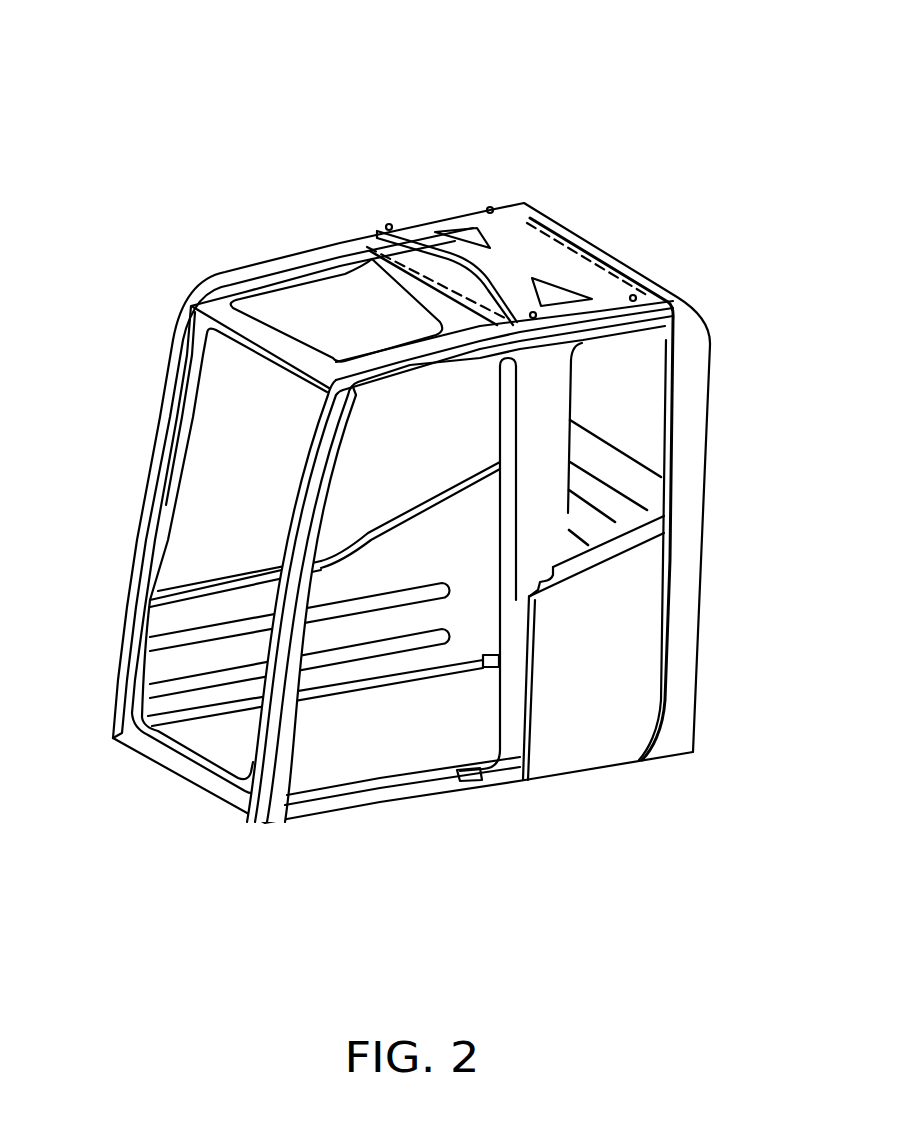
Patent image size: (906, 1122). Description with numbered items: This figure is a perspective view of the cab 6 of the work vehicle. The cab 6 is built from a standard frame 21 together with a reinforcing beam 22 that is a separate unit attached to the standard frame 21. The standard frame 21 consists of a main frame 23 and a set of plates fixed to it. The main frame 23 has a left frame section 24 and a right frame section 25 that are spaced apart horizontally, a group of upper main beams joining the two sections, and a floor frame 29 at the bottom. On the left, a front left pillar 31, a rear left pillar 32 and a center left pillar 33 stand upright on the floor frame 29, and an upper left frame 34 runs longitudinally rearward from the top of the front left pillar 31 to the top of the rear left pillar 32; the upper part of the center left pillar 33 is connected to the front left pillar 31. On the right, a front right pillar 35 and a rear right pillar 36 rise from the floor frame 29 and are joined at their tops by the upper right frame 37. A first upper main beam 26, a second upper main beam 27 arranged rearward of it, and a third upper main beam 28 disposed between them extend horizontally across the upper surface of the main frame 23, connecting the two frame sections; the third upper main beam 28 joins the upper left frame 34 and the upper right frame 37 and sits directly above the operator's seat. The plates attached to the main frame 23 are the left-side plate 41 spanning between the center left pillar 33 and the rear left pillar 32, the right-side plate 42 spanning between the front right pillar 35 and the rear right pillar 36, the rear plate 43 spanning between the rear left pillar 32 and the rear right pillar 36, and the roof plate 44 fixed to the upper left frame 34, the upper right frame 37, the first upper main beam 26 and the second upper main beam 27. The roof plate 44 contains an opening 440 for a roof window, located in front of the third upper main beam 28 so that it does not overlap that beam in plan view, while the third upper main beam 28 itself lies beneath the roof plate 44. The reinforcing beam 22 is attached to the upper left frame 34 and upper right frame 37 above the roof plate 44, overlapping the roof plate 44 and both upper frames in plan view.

The cab 6 is at (292, 98).
The standard frame 21 is at (290, 236).
The reinforcing beam 22 is at (514, 247).
The main frame 23 is at (371, 822).
The left frame section 24 is at (291, 470).
The right frame section 25 is at (150, 371).
The first upper main beam 26 is at (271, 335).
The second upper main beam 27 is at (600, 257).
The third upper main beam 28 is at (416, 260).
The floor frame 29 is at (430, 788).
The front left pillar 31 is at (303, 538).
The rear left pillar 32 is at (690, 458).
The center left pillar 33 is at (537, 427).
The upper left frame 34 is at (410, 365).
The front right pillar 35 is at (140, 545).
The rear right pillar 36 is at (511, 398).
The upper right frame 37 is at (326, 247).
The left-side plate 41 is at (612, 658).
The right-side plate 42 is at (377, 628).
The rear plate 43 is at (597, 490).
The roof plate 44 is at (462, 262).
The opening 440 is at (397, 350).